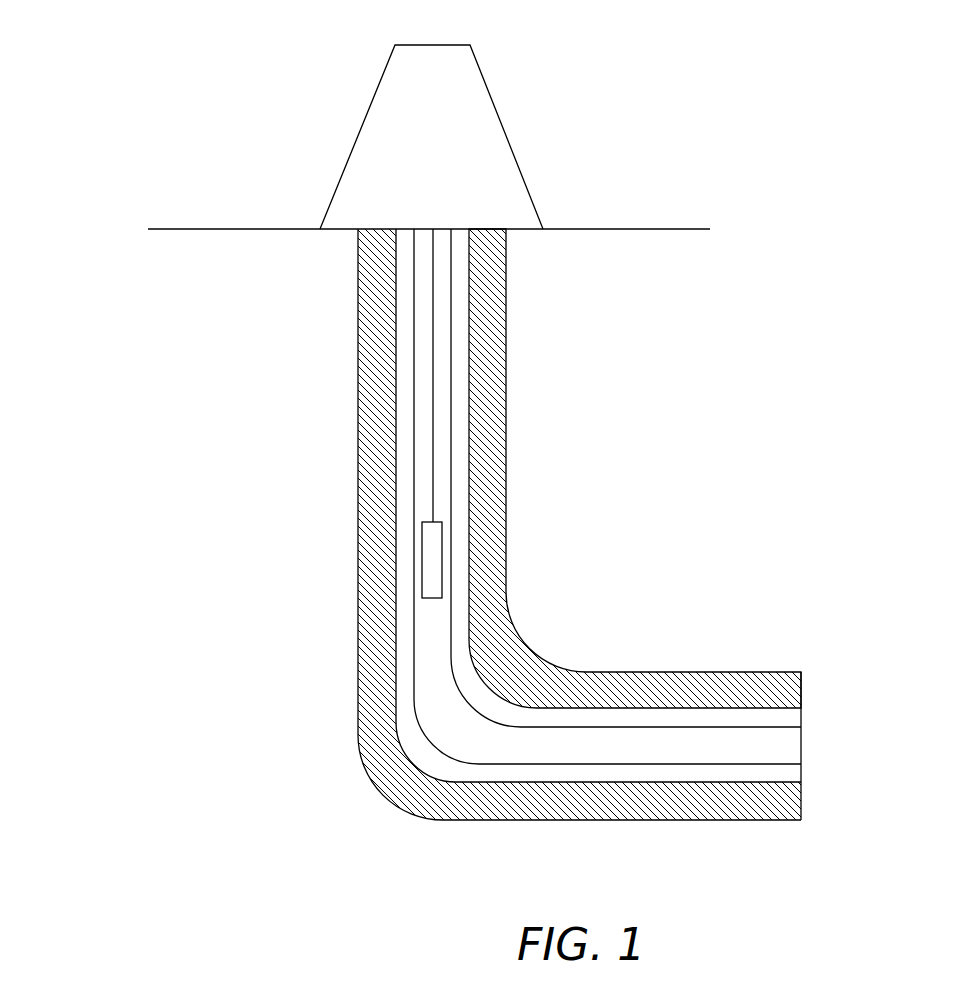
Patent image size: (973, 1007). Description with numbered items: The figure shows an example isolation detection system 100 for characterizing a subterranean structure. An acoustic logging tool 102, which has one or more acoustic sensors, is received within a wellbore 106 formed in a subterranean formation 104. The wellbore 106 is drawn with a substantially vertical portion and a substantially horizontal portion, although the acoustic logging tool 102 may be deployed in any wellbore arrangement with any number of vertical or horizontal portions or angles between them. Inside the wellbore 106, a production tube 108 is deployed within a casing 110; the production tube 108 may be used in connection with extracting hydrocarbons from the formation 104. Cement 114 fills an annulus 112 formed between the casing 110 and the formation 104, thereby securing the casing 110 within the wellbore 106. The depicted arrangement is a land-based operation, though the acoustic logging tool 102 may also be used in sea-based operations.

The isolation detection system 100 is at (175, 118).
The acoustic logging tool 102 is at (422, 567).
The subterranean formation 104 is at (727, 278).
The wellbore 106 is at (552, 408).
The production tube 108 is at (414, 432).
The casing 110 is at (396, 369).
The annulus 112 is at (832, 792).
The cement 114 is at (358, 302).